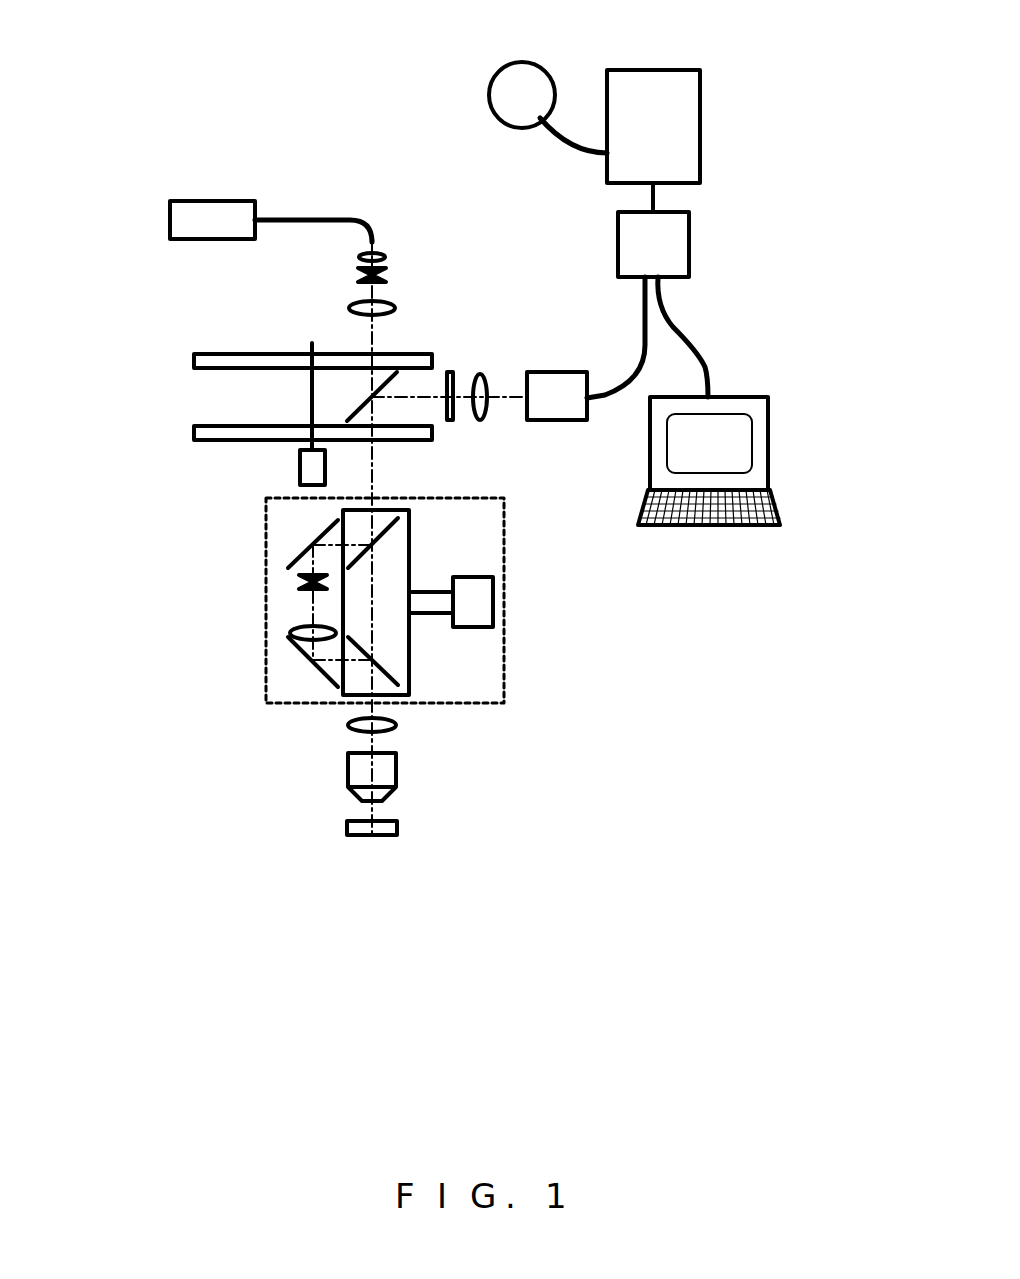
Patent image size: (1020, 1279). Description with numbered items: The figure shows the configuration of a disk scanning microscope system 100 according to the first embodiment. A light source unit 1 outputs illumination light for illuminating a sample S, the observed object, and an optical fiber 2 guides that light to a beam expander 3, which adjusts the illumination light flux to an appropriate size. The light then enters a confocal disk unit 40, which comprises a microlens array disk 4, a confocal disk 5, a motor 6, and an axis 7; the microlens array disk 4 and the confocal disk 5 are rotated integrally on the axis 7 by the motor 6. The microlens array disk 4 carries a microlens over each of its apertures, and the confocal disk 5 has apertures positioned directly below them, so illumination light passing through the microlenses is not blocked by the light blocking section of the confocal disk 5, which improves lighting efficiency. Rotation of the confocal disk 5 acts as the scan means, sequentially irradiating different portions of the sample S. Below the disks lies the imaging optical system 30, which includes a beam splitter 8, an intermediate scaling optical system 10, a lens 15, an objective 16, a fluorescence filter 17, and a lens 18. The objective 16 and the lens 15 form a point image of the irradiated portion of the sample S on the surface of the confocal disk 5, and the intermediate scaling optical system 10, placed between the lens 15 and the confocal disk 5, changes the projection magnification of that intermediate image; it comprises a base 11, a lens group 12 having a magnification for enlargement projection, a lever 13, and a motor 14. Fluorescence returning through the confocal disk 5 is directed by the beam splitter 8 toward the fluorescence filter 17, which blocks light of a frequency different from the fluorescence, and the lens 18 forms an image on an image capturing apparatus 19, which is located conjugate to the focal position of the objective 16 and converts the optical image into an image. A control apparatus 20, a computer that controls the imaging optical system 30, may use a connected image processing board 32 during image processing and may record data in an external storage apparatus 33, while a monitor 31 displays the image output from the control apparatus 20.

The disk scanning microscope system 100 is at (170, 73).
The light source unit 1 is at (240, 201).
The optical fiber 2 is at (307, 215).
The beam expander 3 is at (348, 268).
The microlens array disk 4 is at (194, 360).
The confocal disk 5 is at (194, 429).
The motor 6 is at (300, 465).
The axis 7 is at (313, 356).
The beam splitter 8 is at (379, 377).
The confocal disk unit 40 is at (113, 338).
The intermediate scaling optical system 10 is at (266, 516).
The base 11 is at (409, 518).
The lens group 12 is at (290, 578).
The lever 13 is at (430, 616).
The motor 14 is at (468, 577).
The lens 15 is at (396, 726).
The objective 16 is at (396, 770).
The sample S is at (347, 827).
The imaging optical system 30 is at (515, 858).
The fluorescence filter 17 is at (450, 372).
The lens 18 is at (481, 374).
The image capturing apparatus 19 is at (537, 372).
The control apparatus 20 is at (700, 110).
The monitor 31 is at (770, 432).
The image processing board 32 is at (690, 242).
The external storage apparatus 33 is at (523, 62).